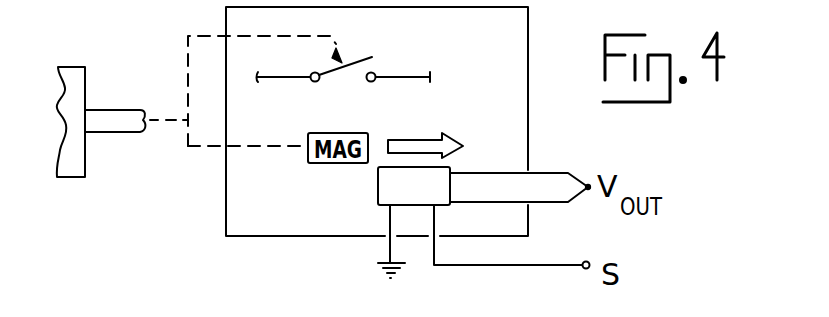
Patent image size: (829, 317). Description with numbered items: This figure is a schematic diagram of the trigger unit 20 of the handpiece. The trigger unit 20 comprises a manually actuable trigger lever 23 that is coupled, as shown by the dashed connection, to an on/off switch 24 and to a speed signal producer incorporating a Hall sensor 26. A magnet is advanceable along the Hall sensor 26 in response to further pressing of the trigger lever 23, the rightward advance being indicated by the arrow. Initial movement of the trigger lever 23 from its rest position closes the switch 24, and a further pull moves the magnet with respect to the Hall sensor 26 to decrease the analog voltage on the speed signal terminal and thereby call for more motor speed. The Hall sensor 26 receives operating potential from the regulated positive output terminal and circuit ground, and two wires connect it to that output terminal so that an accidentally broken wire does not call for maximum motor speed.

The trigger unit 20 is at (199, 189).
The trigger lever 23 is at (70, 168).
The on/off switch 24 is at (353, 62).
The Hall sensor 26 is at (378, 182).